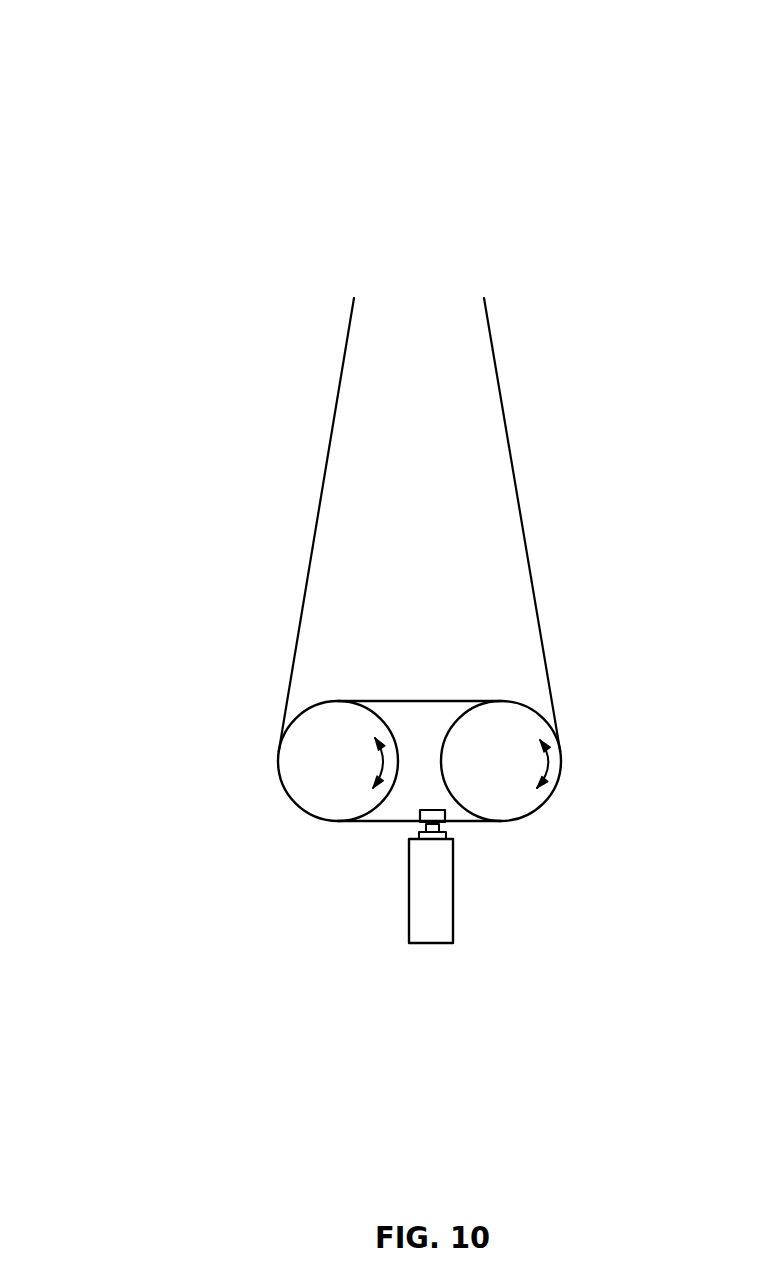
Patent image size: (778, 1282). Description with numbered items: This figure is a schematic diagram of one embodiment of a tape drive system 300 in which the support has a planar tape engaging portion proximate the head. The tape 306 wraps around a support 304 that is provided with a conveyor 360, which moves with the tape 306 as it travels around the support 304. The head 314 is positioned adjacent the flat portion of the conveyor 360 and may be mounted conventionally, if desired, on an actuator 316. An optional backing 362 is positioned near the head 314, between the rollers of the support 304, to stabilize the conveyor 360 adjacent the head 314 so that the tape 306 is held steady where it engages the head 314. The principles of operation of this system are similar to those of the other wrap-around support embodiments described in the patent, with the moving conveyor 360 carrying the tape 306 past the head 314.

The tape drive system 300 is at (66, 120).
The support 304 is at (310, 783).
The tape 306 is at (338, 392).
The head 314 is at (400, 839).
The actuator 316 is at (453, 912).
The conveyor 360 is at (417, 701).
The backing 362 is at (430, 810).